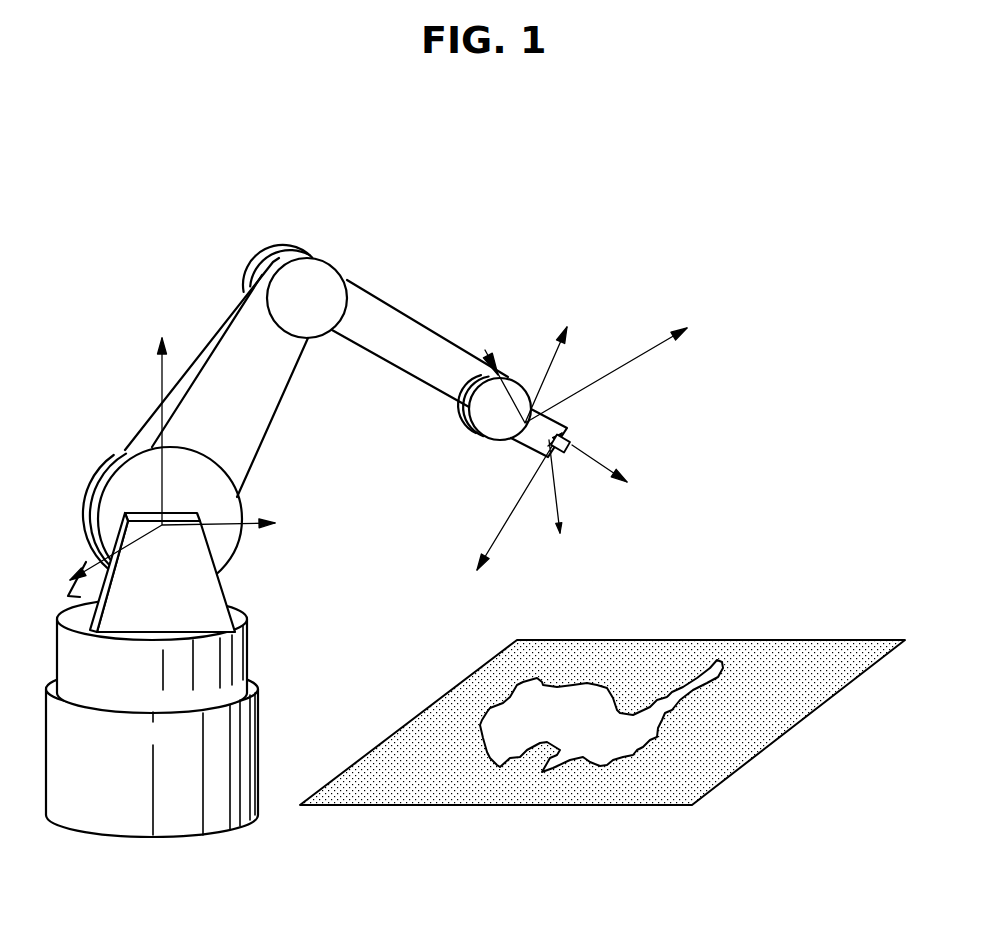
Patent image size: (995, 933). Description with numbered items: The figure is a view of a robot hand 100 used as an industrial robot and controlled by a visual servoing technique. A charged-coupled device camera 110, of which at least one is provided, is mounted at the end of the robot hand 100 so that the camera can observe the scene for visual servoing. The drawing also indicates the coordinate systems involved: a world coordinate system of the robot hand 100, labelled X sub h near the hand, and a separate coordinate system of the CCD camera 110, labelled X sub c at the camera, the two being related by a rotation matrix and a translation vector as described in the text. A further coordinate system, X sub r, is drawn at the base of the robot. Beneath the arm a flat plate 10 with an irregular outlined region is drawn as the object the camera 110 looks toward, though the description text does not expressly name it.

The robot hand 100 is at (422, 318).
The charged-coupled device (CCD) camera 110 is at (567, 429).
The workpiece plate 10 is at (592, 786).